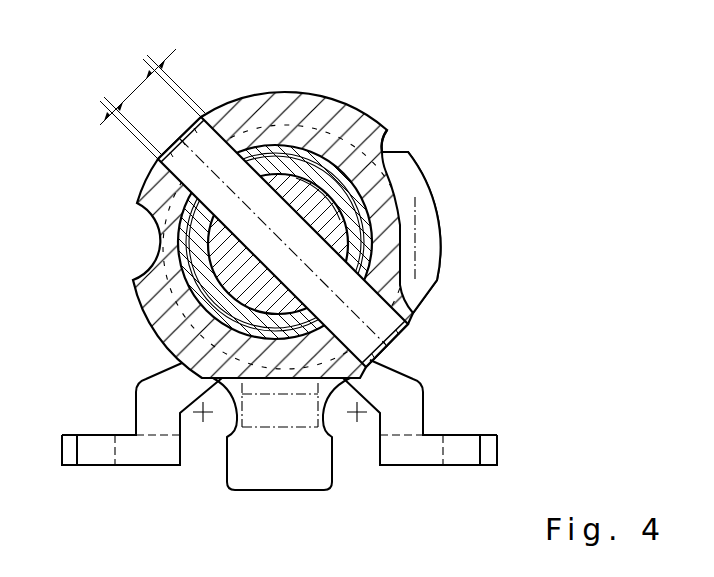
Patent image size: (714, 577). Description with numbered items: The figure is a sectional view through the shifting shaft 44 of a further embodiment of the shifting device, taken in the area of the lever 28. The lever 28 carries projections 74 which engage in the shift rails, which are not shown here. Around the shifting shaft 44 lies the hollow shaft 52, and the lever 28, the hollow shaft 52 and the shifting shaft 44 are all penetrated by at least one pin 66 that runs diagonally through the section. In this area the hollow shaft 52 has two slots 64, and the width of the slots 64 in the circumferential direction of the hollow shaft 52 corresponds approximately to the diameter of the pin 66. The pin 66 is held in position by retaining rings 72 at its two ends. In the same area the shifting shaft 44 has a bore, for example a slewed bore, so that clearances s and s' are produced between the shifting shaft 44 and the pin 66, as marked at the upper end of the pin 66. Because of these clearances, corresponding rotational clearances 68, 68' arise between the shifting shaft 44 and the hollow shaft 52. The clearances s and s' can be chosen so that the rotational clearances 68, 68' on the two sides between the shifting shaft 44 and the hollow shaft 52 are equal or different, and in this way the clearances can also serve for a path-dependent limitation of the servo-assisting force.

The lever 28 is at (158, 314).
The shifting shaft 44 is at (372, 121).
The hollow shaft 52 is at (397, 187).
The slots 64 is at (240, 160).
The pin 66 is at (150, 172).
The rotational clearance 68 is at (190, 244).
The rotational clearance 68' is at (332, 121).
The retaining rings 72 is at (201, 115).
The projections 74 is at (258, 466).